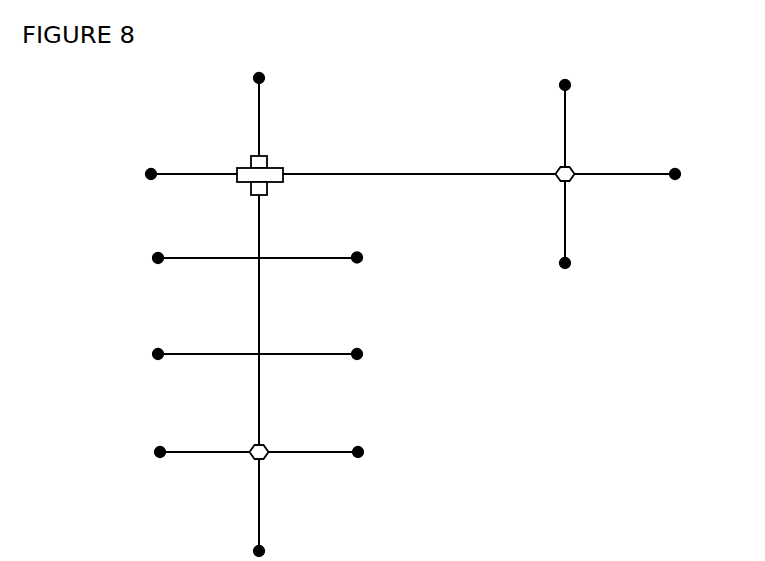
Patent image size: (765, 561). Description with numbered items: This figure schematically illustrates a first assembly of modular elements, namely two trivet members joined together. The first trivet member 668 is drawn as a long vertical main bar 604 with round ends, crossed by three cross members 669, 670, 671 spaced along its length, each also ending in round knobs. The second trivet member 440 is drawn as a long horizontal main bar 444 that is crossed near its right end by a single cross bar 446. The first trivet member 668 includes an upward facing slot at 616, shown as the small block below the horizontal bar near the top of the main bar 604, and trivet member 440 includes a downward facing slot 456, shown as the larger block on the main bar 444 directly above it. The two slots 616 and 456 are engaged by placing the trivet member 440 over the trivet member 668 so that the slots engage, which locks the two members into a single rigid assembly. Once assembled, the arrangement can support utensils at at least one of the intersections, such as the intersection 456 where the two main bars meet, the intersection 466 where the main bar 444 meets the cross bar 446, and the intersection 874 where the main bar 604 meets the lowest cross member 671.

The trivet member 440 is at (424, 84).
The main bar 444 is at (449, 166).
The cross bar 446 is at (566, 207).
The intersection 466 is at (573, 169).
The downward facing slot 456 is at (248, 175).
The upward facing slot 616 is at (265, 193).
The first trivet member 668 is at (118, 222).
The cross member 669 is at (210, 258).
The cross member 670 is at (204, 358).
The cross member 671 is at (193, 452).
The intersection 874 is at (265, 448).
The main bar 604 is at (263, 498).